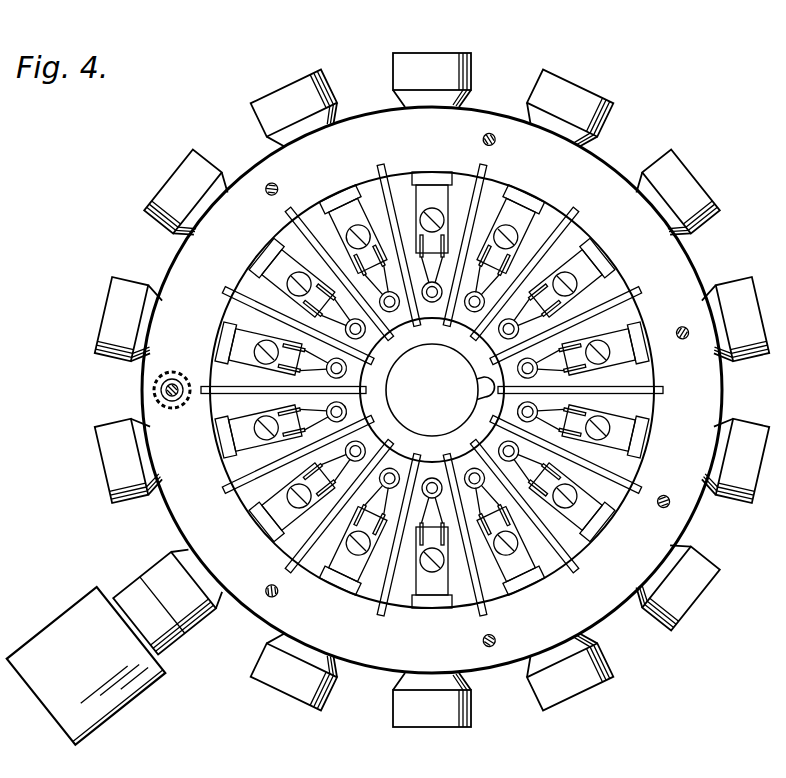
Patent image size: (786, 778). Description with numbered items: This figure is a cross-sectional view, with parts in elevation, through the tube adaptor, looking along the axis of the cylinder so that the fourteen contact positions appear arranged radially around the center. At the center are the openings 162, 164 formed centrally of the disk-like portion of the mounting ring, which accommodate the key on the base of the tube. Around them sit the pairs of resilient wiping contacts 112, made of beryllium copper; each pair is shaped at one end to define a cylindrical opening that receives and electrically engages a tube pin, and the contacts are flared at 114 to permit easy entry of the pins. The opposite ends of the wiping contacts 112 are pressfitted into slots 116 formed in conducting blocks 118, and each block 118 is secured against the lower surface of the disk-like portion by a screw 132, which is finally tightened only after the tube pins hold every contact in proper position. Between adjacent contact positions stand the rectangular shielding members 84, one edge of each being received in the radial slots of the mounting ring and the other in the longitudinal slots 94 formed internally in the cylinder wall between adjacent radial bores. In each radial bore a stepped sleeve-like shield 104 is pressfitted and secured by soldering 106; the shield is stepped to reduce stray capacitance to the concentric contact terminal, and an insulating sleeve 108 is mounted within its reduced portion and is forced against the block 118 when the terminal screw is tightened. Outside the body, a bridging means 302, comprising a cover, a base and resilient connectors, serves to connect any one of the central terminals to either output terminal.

The rectangular shielding member 84 is at (636, 392).
The longitudinal slot 94 is at (640, 490).
The shield 104 is at (250, 688).
The soldering 106 is at (345, 668).
The insulating sleeve 108 is at (337, 583).
The resilient wiping contact 112 is at (447, 461).
The flare 114 is at (417, 461).
The slot 116 is at (350, 514).
The conducting block 118 is at (333, 563).
The screw 132 is at (370, 558).
The opening 162 is at (456, 433).
The opening 164 is at (477, 380).
The bridging means 302 is at (35, 620).